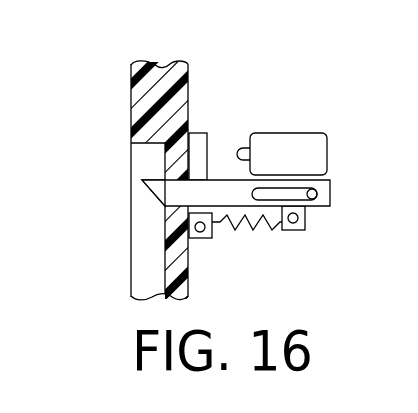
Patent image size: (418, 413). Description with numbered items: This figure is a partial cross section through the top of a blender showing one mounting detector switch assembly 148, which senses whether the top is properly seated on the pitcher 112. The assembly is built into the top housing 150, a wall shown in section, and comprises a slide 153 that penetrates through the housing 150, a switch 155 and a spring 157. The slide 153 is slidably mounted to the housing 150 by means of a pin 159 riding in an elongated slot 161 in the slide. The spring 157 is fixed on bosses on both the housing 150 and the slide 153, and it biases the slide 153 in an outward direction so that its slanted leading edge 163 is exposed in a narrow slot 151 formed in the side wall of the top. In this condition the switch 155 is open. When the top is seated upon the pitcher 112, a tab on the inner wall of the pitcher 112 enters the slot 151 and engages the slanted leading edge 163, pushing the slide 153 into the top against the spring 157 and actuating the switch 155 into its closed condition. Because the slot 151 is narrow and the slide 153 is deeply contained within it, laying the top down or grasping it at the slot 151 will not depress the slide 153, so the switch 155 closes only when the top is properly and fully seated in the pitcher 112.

The pitcher 112 is at (402, 292).
The mounting detector switch assembly 148 is at (258, 108).
The top housing 150 is at (131, 83).
The slot 151 is at (136, 158).
The slide 153 is at (157, 197).
The switch 155 is at (327, 142).
The spring 157 is at (230, 231).
The pin 159 is at (317, 190).
The slot 161 is at (294, 197).
The slanted leading edge 163 is at (165, 200).